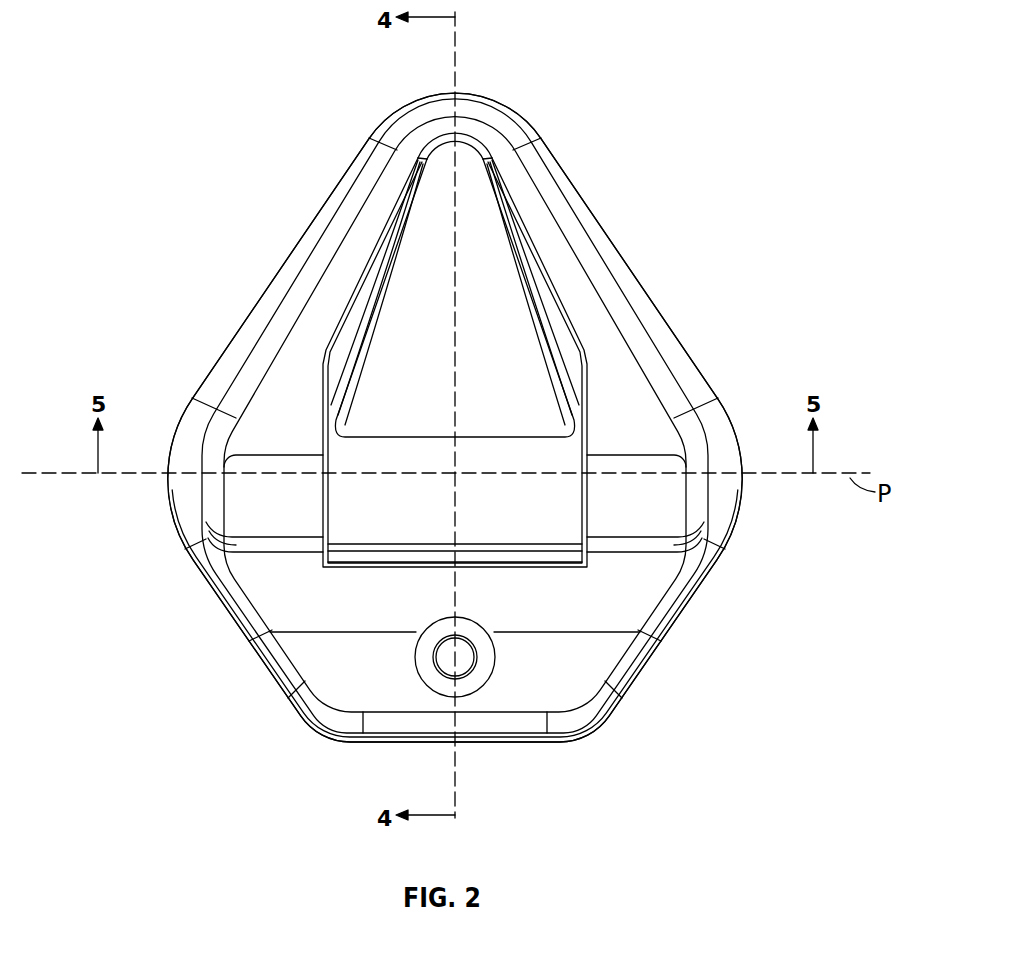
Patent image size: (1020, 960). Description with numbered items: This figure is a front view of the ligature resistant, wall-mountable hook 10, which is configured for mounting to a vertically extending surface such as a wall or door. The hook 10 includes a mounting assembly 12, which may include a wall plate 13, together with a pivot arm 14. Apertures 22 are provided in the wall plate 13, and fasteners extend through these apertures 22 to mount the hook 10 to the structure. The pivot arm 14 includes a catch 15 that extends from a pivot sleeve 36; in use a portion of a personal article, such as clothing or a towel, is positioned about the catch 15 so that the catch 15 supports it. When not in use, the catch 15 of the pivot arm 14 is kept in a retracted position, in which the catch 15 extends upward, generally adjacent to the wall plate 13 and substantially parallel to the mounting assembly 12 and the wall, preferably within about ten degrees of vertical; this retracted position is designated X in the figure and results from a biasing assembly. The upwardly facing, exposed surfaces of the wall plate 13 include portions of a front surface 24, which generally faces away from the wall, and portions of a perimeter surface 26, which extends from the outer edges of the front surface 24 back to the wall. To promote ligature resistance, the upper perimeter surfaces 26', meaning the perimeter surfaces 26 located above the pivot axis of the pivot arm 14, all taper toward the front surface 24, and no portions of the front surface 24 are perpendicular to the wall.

The hook 10 is at (715, 38).
The mounting assembly 12 is at (742, 338).
The wall plate 13 is at (627, 372).
The pivot arm 14 is at (543, 243).
The catch 15 is at (512, 312).
The apertures 22 is at (480, 685).
The front surface 24 is at (280, 402).
The perimeter surface 26 is at (428, 570).
The upper perimeter surfaces 26' is at (455, 234).
The pivot sleeve 36 is at (543, 530).